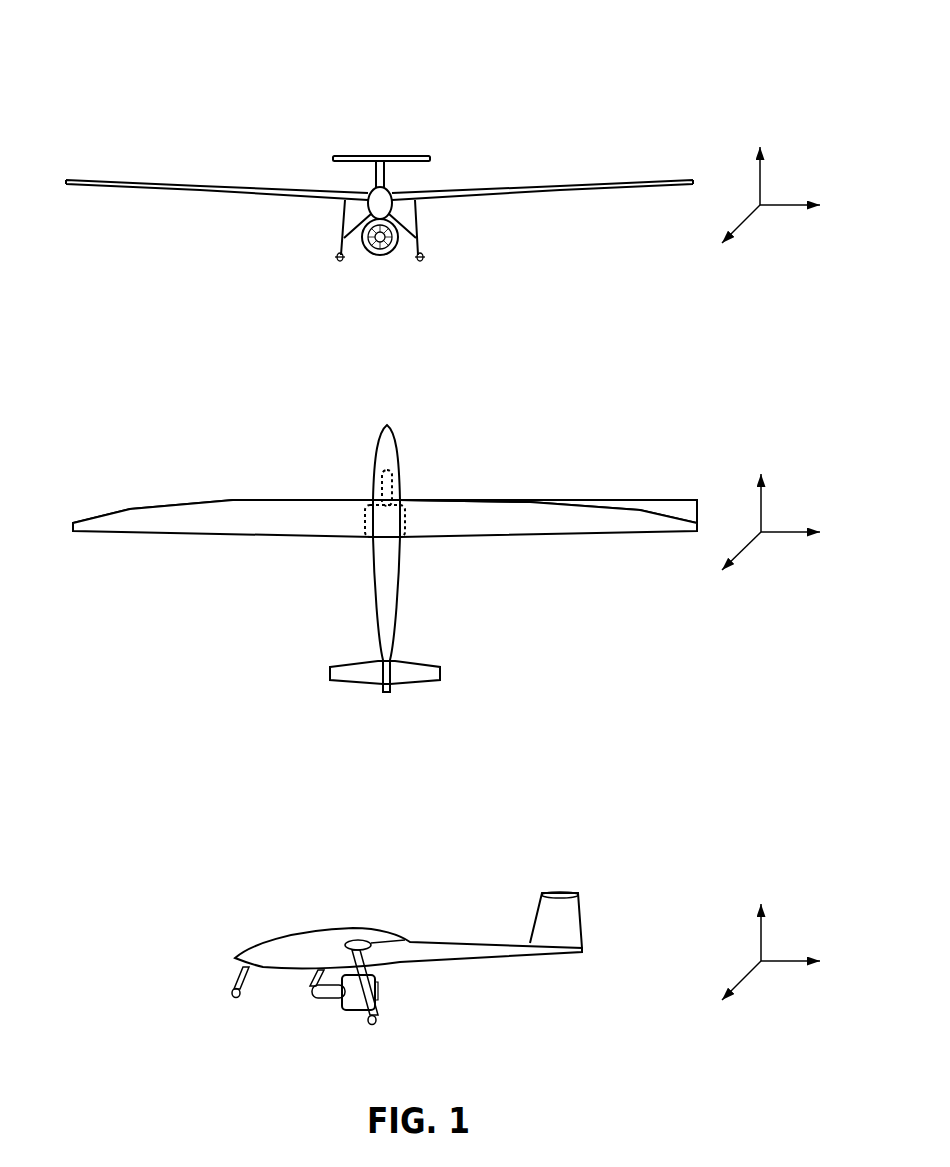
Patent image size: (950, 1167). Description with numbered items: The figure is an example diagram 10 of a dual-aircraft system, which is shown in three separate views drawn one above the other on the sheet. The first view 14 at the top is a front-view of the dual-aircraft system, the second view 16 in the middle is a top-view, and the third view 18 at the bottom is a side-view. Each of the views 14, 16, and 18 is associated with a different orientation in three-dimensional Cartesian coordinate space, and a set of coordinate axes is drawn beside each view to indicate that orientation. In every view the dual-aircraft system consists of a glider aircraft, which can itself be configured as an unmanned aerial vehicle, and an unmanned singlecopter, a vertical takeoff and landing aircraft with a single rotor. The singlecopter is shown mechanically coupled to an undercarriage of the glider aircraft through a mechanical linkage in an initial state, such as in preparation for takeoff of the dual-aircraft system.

The diagram 10 is at (108, 53).
The first view 14 is at (115, 145).
The second view 16 is at (115, 458).
The third view 18 is at (115, 900).